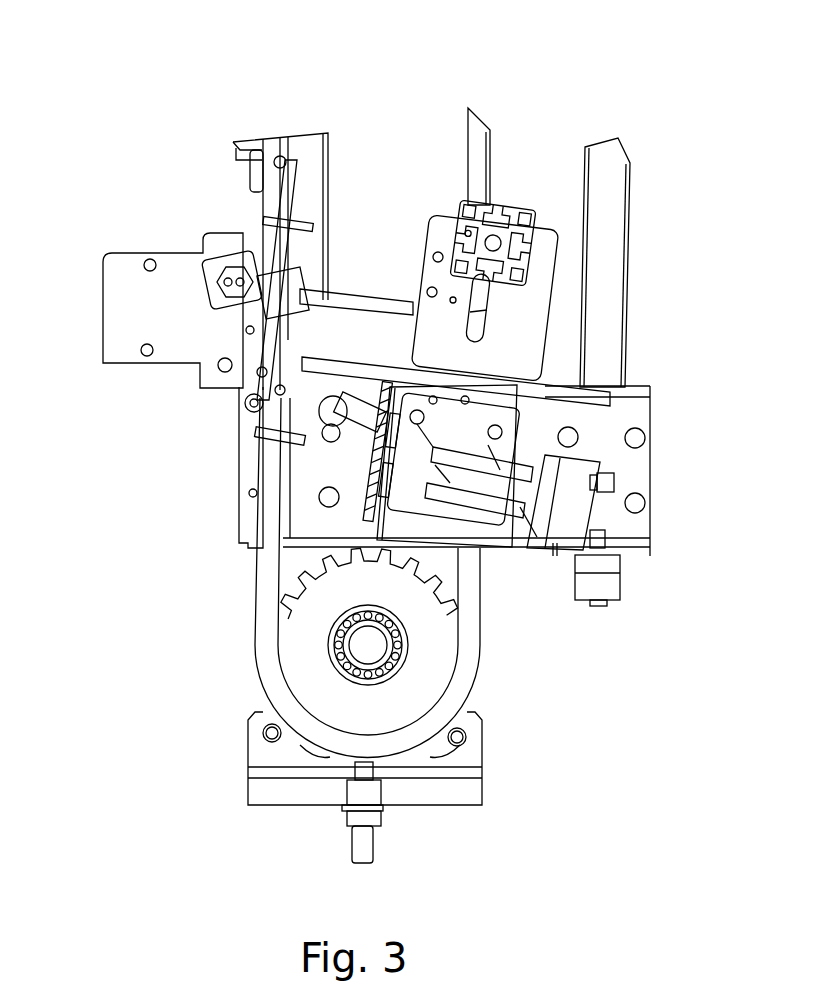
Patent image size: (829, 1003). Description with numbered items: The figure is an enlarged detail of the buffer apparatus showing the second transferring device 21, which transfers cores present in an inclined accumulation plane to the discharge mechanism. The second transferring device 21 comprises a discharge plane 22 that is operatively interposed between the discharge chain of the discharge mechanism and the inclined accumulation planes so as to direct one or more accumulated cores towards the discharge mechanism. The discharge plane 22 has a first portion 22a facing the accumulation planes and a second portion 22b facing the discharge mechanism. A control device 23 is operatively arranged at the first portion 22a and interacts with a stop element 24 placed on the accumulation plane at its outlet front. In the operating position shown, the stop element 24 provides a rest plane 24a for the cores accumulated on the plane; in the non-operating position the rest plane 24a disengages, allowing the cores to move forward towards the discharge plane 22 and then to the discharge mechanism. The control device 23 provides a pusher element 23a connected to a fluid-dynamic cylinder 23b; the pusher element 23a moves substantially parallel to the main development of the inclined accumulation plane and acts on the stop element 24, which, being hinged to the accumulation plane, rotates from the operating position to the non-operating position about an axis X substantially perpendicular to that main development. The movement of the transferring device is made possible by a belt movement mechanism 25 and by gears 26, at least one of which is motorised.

The second transferring device 21 is at (580, 387).
The discharge plane 22 is at (420, 378).
The first portion 22a is at (388, 298).
The second portion 22b is at (600, 417).
The control device 23 is at (373, 377).
The pusher element 23a is at (362, 415).
The fluid-dynamic cylinder 23b is at (605, 483).
The stop element 24 is at (300, 173).
The rest plane 24a is at (297, 170).
The belt movement mechanism 25 is at (472, 620).
The gear 26 is at (420, 670).
The axis X is at (240, 390).